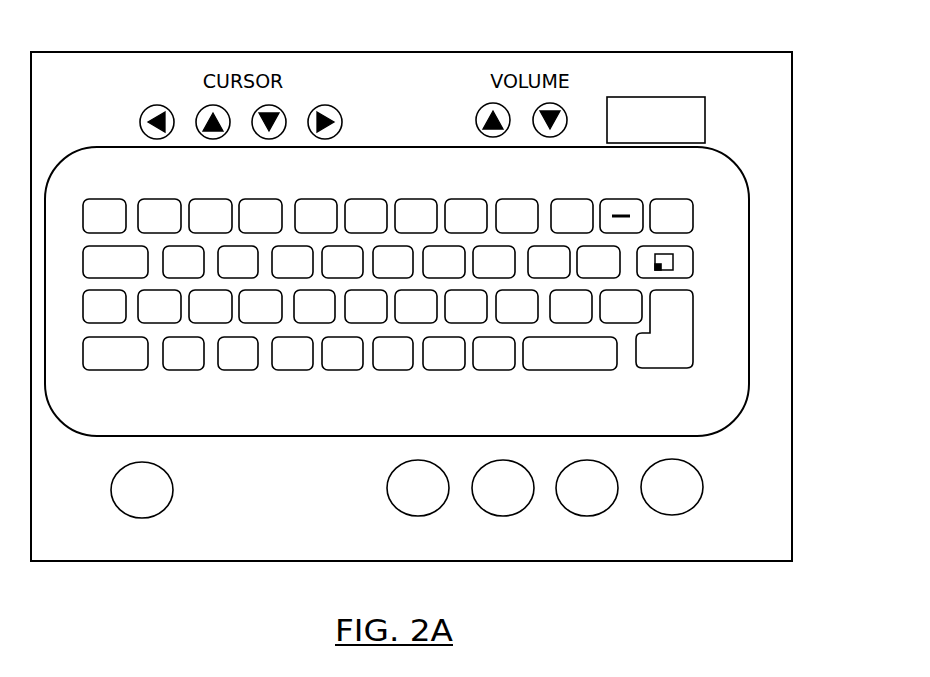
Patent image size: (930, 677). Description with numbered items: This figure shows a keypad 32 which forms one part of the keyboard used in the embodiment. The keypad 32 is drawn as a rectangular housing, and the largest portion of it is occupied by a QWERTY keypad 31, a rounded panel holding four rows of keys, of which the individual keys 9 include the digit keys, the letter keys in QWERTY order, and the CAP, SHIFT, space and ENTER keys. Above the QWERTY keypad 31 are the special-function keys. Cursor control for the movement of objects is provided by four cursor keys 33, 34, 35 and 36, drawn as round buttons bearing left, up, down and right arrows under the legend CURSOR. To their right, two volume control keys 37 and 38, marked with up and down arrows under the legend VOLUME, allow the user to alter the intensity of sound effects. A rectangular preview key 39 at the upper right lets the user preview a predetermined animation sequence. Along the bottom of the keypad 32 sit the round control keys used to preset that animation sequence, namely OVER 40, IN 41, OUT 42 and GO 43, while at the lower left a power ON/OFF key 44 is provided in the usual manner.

The keys 9 is at (388, 296).
The QWERTY keypad 31 is at (280, 436).
The keypad 32 is at (755, 561).
The cursor key 33 is at (171, 107).
The cursor key 34 is at (203, 110).
The cursor key 35 is at (284, 109).
The cursor key 36 is at (323, 100).
The volume control key 37 is at (493, 103).
The volume control key 38 is at (566, 107).
The preview key 39 is at (668, 97).
The OVER control key 40 is at (436, 512).
The IN control key 41 is at (525, 512).
The OUT control key 42 is at (595, 515).
The GO control key 43 is at (703, 477).
The power ON/OFF key 44 is at (130, 517).